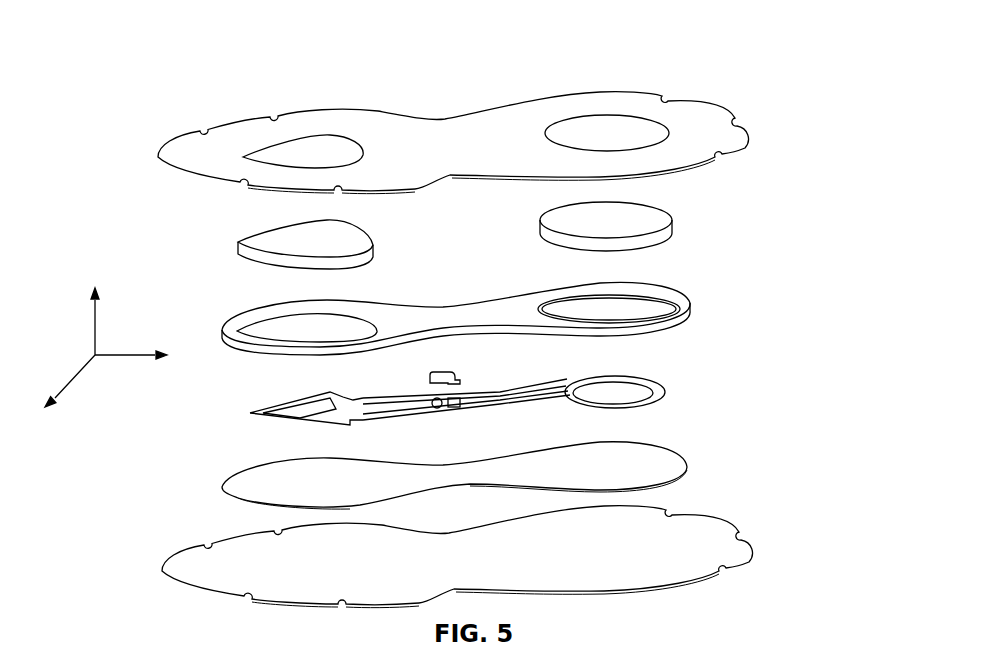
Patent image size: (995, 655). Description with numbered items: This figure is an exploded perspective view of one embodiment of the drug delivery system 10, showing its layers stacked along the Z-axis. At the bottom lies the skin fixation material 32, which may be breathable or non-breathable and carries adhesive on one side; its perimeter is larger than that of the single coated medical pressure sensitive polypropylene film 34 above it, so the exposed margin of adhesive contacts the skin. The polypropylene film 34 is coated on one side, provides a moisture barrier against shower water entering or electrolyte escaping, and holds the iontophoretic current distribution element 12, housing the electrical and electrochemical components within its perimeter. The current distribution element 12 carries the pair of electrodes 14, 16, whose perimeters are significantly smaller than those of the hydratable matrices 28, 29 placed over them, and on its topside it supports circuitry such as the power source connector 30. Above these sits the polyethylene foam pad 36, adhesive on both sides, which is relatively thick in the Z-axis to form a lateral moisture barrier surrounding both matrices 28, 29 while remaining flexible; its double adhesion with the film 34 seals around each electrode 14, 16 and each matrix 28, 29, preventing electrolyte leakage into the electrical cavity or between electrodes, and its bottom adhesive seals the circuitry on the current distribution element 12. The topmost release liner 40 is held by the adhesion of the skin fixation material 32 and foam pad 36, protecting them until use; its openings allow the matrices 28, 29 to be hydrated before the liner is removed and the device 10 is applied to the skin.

The drug delivery system 10 is at (178, 66).
The current distribution element 12 is at (489, 406).
The electrode 14 is at (297, 410).
The electrode 16 is at (613, 395).
The hydratable matrix 28 is at (383, 226).
The hydratable matrix 29 is at (684, 207).
The power source connector 30 is at (464, 375).
The skin fixation material 32 is at (752, 573).
The single coated medical pressure sensitive polypropylene film 34 is at (700, 470).
The polyethylene foam pad 36 is at (715, 308).
The release liner 40 is at (748, 96).